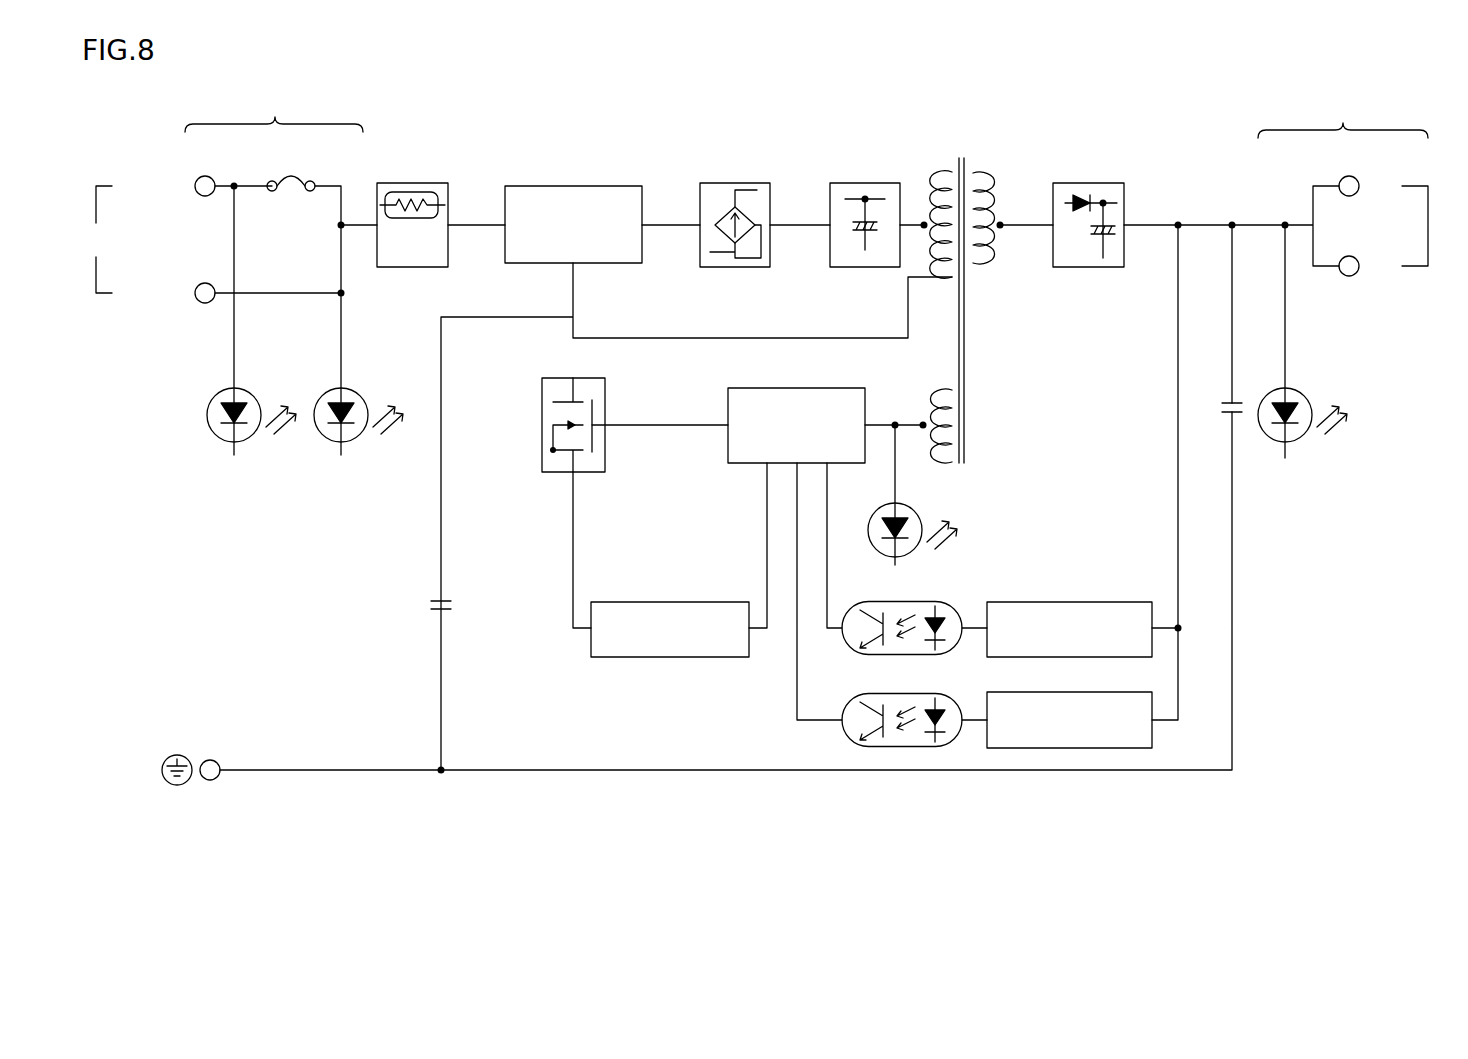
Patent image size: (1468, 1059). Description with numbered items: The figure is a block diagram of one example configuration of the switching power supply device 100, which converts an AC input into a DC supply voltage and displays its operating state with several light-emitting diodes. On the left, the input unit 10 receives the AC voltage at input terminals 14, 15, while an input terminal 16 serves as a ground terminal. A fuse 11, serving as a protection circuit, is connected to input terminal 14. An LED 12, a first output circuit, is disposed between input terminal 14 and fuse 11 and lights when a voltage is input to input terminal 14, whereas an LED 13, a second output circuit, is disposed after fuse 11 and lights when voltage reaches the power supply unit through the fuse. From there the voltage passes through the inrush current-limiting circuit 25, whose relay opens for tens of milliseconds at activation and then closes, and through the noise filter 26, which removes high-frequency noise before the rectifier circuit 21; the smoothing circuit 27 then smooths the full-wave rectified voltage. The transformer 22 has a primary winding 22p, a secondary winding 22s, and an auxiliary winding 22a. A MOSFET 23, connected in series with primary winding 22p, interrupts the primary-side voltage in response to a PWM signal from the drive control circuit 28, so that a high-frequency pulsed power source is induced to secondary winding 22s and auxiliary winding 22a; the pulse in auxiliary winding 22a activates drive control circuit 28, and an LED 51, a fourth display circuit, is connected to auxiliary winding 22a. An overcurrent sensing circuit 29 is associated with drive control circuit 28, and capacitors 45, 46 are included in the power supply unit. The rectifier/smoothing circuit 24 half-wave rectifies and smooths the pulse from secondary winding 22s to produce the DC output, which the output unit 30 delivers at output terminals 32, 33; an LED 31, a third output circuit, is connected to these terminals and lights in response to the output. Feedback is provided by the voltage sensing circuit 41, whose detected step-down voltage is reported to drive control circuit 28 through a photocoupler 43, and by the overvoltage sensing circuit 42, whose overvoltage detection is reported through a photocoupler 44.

The power supply device 100 is at (1378, 77).
The input unit 10 is at (274, 113).
The fuse 11 is at (281, 179).
The LED 12 is at (243, 388).
The LED 13 is at (349, 388).
The input terminal 14 is at (203, 174).
The input terminal 15 is at (204, 282).
The input terminal 16 is at (208, 758).
The rectifier circuit 21 is at (746, 182).
The transformer 22 is at (985, 298).
The primary winding 22p is at (932, 278).
The secondary winding 22s is at (977, 263).
The auxiliary winding 22a is at (942, 390).
The MOSFET 23 is at (588, 377).
The rectifier/smoothing circuit 24 is at (1106, 182).
The inrush current-limiting circuit 25 is at (421, 182).
The noise filter 26 is at (603, 185).
The smoothing circuit 27 is at (877, 182).
The drive control circuit 28 is at (816, 387).
The overcurrent sensing circuit 29 is at (700, 601).
The output unit 30 is at (1343, 118).
The LED 31 is at (1293, 388).
The output terminal 32 is at (1348, 175).
The output terminal 33 is at (1349, 277).
The voltage sensing circuit 41 is at (1103, 601).
The overvoltage sensing circuit 42 is at (1103, 691).
The photocoupler 43 is at (917, 602).
The photocoupler 44 is at (917, 693).
The capacitor 45 is at (447, 597).
The capacitor 46 is at (1230, 400).
The LED 51 is at (907, 502).